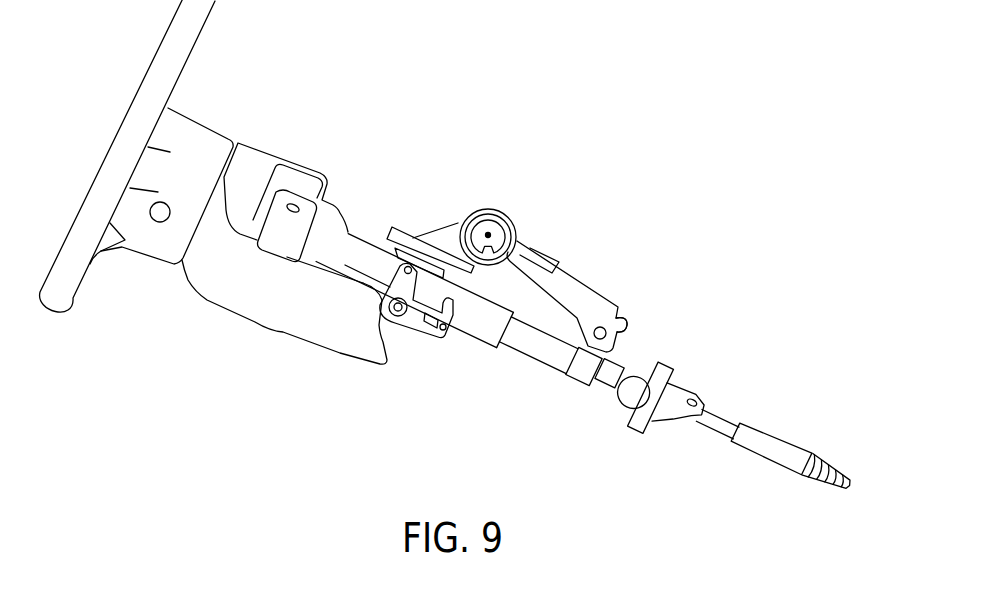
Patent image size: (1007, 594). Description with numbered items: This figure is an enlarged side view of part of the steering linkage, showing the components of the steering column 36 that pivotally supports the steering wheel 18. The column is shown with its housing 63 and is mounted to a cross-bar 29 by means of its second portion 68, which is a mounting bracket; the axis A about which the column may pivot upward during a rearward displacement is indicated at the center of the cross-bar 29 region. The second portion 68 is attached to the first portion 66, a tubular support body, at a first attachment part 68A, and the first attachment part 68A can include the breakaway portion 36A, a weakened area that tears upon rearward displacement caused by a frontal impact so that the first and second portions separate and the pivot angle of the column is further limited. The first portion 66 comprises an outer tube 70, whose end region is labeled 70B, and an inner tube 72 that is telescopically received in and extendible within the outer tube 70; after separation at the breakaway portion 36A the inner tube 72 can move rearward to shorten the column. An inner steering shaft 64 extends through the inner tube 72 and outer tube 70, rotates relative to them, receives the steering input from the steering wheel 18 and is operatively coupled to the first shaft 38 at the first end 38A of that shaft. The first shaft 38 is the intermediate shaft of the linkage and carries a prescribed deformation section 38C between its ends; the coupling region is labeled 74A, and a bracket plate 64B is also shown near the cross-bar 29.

The steering wheel 18 is at (163, 33).
The housing 63 is at (221, 306).
The bracket plate 64B is at (390, 228).
The cross-bar 29 is at (488, 234).
The second portion 68 is at (572, 275).
The first attachment part 68A is at (623, 342).
The steering column 36 is at (606, 164).
The first portion 66 is at (461, 336).
The outer tube 70 is at (480, 341).
The tube end 70B is at (492, 349).
The inner tube 72 is at (518, 354).
The breakaway portion 36A is at (575, 366).
The inner steering shaft 64 is at (598, 385).
The universal joint yoke 74A is at (650, 362).
The first end 38A is at (716, 432).
The first shaft 38 is at (812, 452).
The prescribed deformation section 38C is at (836, 491).